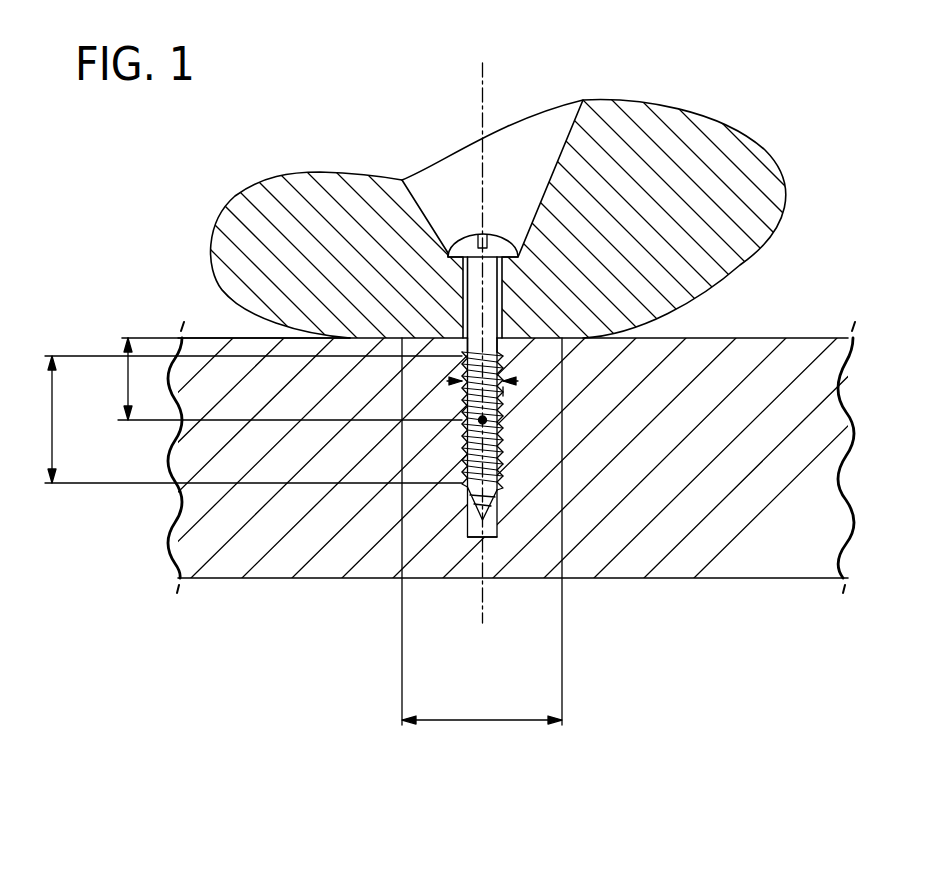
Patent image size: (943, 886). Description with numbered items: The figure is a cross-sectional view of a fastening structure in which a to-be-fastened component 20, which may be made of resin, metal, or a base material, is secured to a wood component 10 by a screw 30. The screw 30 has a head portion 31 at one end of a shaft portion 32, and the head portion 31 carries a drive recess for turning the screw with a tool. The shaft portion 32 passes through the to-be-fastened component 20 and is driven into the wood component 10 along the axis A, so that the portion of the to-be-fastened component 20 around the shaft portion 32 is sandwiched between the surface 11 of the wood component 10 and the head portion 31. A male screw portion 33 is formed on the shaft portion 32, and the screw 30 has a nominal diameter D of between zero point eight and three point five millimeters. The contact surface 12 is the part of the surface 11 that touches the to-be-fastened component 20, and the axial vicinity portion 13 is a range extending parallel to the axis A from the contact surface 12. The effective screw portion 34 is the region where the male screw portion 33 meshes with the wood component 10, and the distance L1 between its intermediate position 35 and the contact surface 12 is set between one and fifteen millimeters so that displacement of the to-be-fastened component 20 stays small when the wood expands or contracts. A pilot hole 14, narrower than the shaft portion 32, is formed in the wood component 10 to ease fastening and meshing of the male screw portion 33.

The wood component 10 is at (795, 352).
The surface 11 is at (203, 338).
The contact surface 12 is at (523, 340).
The axial vicinity portion 13 is at (482, 549).
The pilot hole 14 is at (473, 525).
The to-be-fastened component 20 is at (687, 130).
The screw 30 is at (423, 366).
The head portion 31 is at (468, 228).
The shaft portion 32 is at (468, 307).
The male screw portion 33 is at (495, 465).
The effective screw portion 34 is at (240, 419).
The intermediate position 35 is at (120, 420).
The distance L1 is at (276, 379).
The nominal diameter D is at (485, 380).
The axis A is at (482, 100).